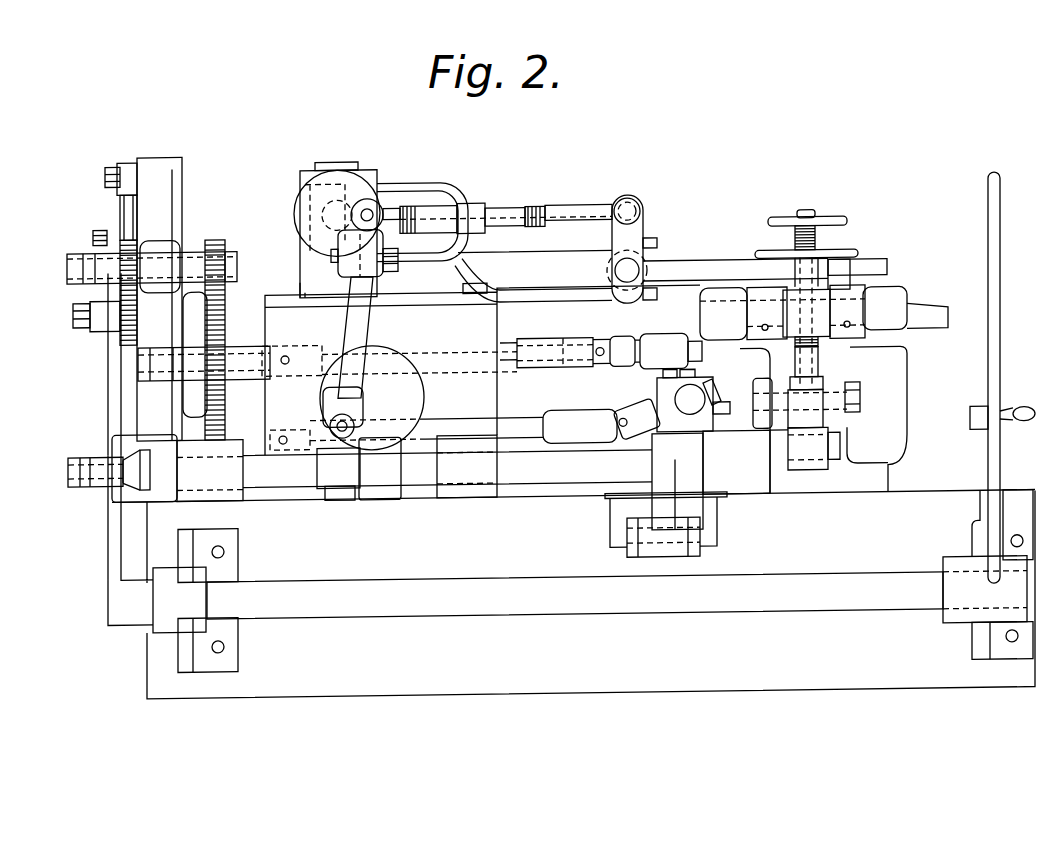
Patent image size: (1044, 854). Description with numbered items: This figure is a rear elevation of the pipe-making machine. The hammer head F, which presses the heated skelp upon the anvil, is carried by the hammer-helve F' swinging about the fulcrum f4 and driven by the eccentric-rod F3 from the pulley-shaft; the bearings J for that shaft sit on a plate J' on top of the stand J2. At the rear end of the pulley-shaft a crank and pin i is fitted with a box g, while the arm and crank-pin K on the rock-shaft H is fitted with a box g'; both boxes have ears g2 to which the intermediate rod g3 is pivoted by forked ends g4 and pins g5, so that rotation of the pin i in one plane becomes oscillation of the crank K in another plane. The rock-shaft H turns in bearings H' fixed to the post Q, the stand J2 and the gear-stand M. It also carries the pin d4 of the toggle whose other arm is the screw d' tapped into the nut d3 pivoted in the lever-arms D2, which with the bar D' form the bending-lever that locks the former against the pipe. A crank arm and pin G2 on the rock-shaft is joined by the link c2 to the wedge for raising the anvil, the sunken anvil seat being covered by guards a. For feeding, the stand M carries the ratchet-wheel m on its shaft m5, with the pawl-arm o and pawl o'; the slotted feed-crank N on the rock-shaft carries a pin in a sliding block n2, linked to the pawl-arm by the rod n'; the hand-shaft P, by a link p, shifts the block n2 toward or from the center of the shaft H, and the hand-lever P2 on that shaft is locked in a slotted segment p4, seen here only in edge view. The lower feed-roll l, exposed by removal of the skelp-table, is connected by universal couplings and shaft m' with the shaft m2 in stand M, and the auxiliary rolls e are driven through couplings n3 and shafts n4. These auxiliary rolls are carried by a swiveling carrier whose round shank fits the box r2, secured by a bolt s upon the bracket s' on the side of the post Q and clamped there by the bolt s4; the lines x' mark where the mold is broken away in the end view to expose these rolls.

The hand-shaft P is at (573, 595).
The hand-lever P2 is at (1001, 386).
The slotted segment p4 is at (976, 438).
The link p is at (108, 543).
The rod n' is at (90, 364).
The gear-stand M is at (182, 197).
The pawl o' is at (101, 202).
The pawl-arm o is at (105, 304).
The shaft of the ratchet-wheel m5 is at (67, 268).
The ratchet-wheel m is at (191, 374).
The shaft m2 is at (243, 366).
The sliding block n2 is at (120, 448).
The slotted feed-crank N is at (144, 469).
The bearings for the rock-shaft H' is at (482, 466).
The rock-shaft H is at (447, 467).
The guards a is at (666, 482).
The link c2 is at (700, 538).
The crank arm and pin G2 is at (652, 554).
The stand J2 is at (265, 318).
The bearings J is at (319, 230).
The plate J' is at (286, 283).
The crank and pin i is at (370, 210).
The box g is at (348, 227).
The ears g2 is at (352, 260).
The forked ends g4 is at (388, 270).
The pins g5 is at (352, 426).
The intermediate rod g3 is at (362, 330).
The box g' is at (323, 490).
The arm and crank-pin K is at (344, 490).
The hammer-helve F' is at (602, 240).
The eccentric-rod F3 is at (580, 212).
The fulcrum of the hammer-helve f4 is at (616, 272).
The head of the hammer F is at (858, 259).
The nut d3 is at (806, 297).
The arms of the bending-lever D2 is at (868, 291).
The bar D' is at (917, 305).
The screw d' is at (800, 388).
The pin d4 is at (810, 466).
The bolt s4 is at (853, 399).
The post Q is at (850, 362).
The shaft m' is at (478, 345).
The lower feed-roll l is at (668, 351).
The shafts n4 is at (426, 417).
The couplings n3 is at (602, 414).
The lines x' is at (685, 404).
The bolt s is at (656, 382).
The box r2 is at (697, 384).
The auxiliary feed-rolls e is at (714, 390).
The bracket s' is at (729, 409).